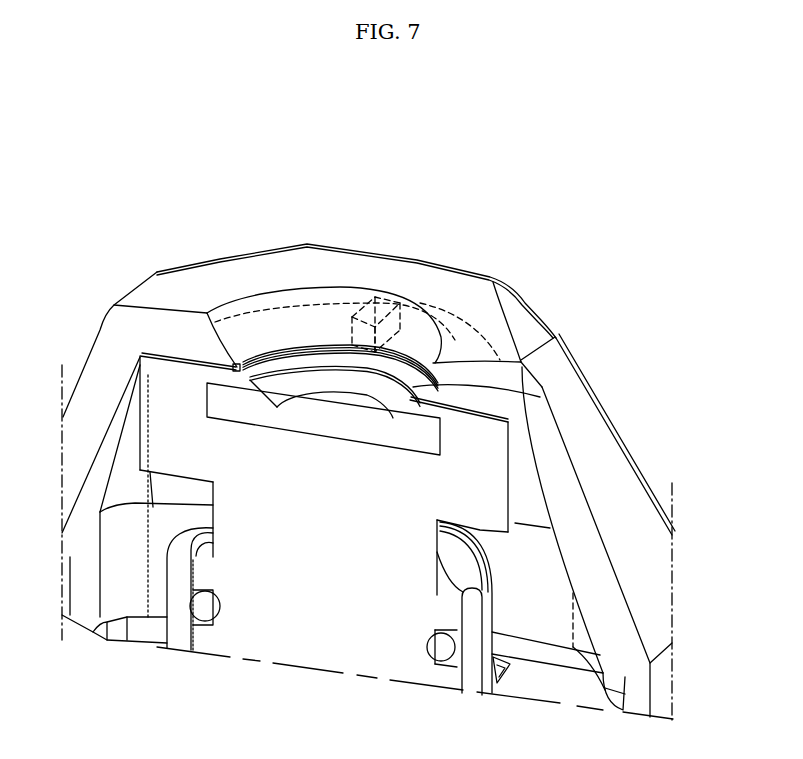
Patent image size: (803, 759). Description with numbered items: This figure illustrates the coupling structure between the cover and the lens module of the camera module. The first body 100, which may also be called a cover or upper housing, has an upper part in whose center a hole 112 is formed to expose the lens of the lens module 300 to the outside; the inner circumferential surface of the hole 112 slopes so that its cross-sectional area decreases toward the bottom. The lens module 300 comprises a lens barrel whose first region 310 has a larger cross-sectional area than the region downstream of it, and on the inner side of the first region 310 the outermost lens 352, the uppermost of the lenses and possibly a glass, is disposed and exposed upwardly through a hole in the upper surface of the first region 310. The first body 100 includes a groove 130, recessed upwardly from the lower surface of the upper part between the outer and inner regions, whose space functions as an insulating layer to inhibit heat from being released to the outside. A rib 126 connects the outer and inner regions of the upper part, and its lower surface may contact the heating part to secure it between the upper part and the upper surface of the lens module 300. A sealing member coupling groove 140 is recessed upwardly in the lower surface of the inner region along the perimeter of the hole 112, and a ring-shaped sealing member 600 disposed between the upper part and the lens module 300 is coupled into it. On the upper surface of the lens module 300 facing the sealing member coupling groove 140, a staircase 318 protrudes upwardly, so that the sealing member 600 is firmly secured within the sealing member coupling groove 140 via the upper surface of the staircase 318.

The first body 100 is at (413, 282).
The hole 112 is at (371, 396).
The rib 126 is at (365, 300).
The groove 130 is at (275, 313).
The sealing member coupling groove 140 is at (527, 364).
The lens module 300 is at (518, 507).
The first region 310 is at (163, 404).
The staircase 318 is at (237, 367).
The outermost lens 352 is at (432, 432).
The sealing member 600 is at (540, 397).